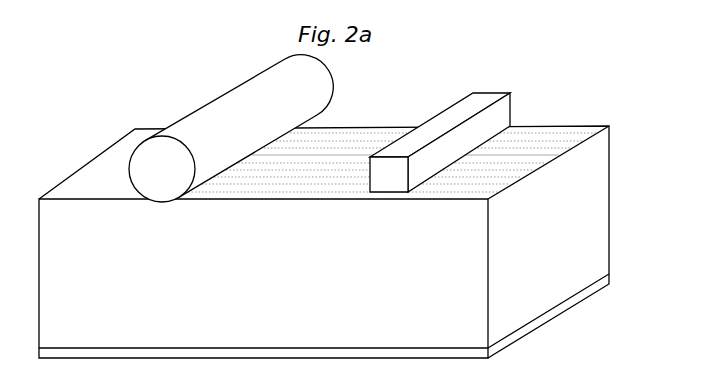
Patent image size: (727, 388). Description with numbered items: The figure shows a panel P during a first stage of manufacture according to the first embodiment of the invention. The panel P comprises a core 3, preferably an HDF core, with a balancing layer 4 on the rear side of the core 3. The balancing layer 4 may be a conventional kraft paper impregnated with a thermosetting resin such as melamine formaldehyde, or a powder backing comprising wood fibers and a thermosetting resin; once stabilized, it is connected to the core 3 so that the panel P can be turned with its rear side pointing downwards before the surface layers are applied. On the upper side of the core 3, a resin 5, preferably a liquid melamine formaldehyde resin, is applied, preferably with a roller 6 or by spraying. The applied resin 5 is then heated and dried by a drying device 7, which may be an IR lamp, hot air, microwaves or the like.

The core 3 is at (604, 225).
The balancing layer 4 is at (607, 279).
The resin 5 is at (348, 140).
The roller 6 is at (200, 115).
The drying device 7 is at (438, 118).
The panel P is at (92, 146).